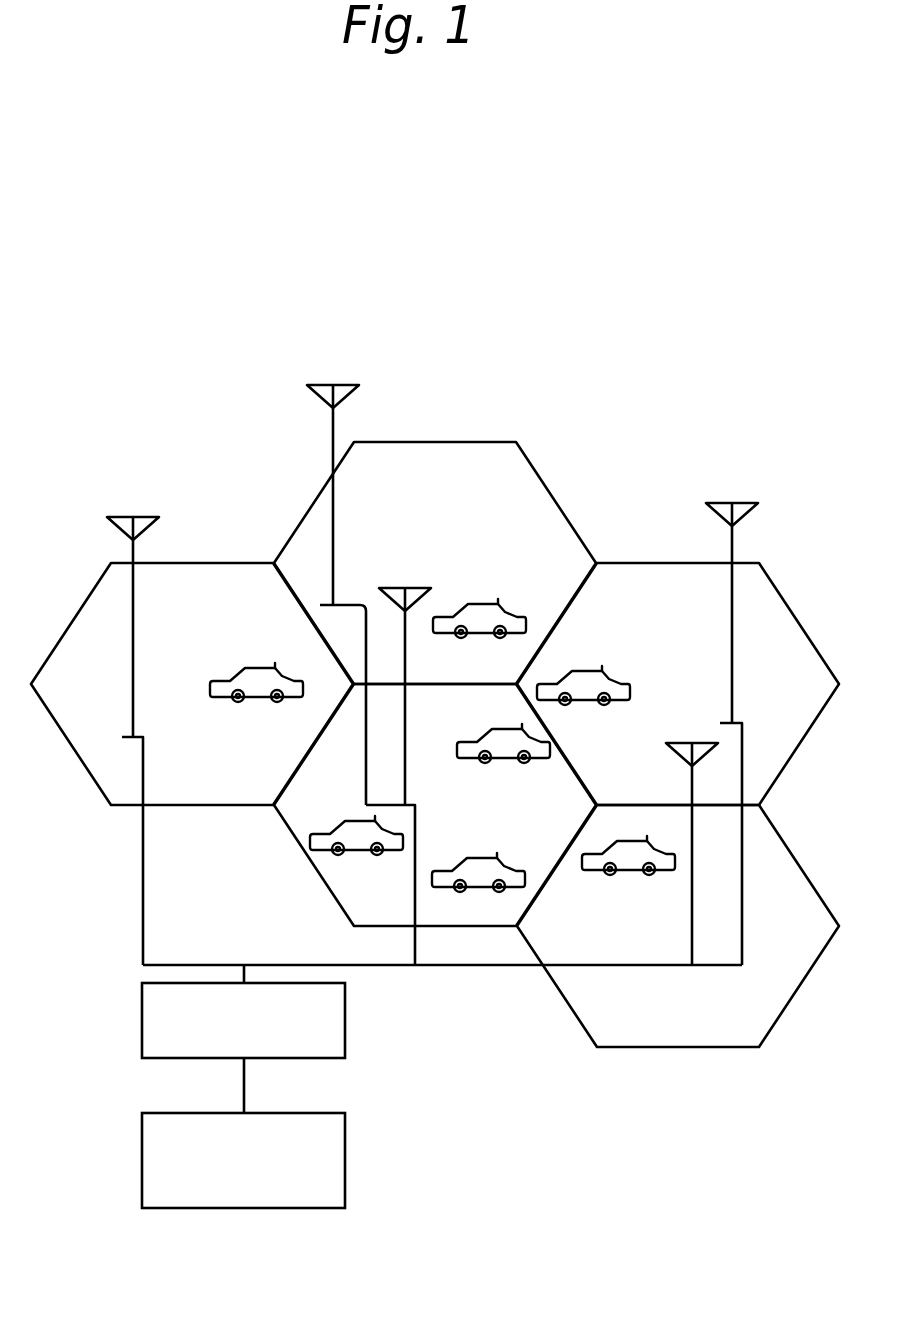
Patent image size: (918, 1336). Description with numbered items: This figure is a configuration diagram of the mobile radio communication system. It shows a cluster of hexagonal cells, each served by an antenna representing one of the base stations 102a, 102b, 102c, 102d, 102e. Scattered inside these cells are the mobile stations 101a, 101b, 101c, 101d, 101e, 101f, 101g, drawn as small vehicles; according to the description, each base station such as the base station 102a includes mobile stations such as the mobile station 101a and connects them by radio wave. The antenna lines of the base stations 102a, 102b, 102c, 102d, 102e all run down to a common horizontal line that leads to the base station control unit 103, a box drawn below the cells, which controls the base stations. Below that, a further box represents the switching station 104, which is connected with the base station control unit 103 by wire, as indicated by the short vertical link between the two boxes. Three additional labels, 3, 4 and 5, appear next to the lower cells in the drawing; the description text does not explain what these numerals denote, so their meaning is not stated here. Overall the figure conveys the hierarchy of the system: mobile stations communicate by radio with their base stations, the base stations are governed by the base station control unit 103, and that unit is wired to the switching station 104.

The cell 3 is at (435, 805).
The cell 4 is at (678, 733).
The cell 5 is at (678, 926).
The mobile station 101a is at (358, 851).
The mobile station 101b is at (470, 745).
The mobile station 101c is at (512, 866).
The mobile station 101d is at (596, 871).
The mobile station 101e is at (620, 675).
The mobile station 101f is at (500, 604).
The mobile station 101g is at (270, 666).
The base station 102a is at (339, 605).
The base station 102b is at (411, 800).
The base station 102c is at (736, 723).
The base station 102d is at (135, 735).
The base station 102e is at (690, 954).
The base station control unit 103 is at (345, 1038).
The switching station 104 is at (345, 1143).